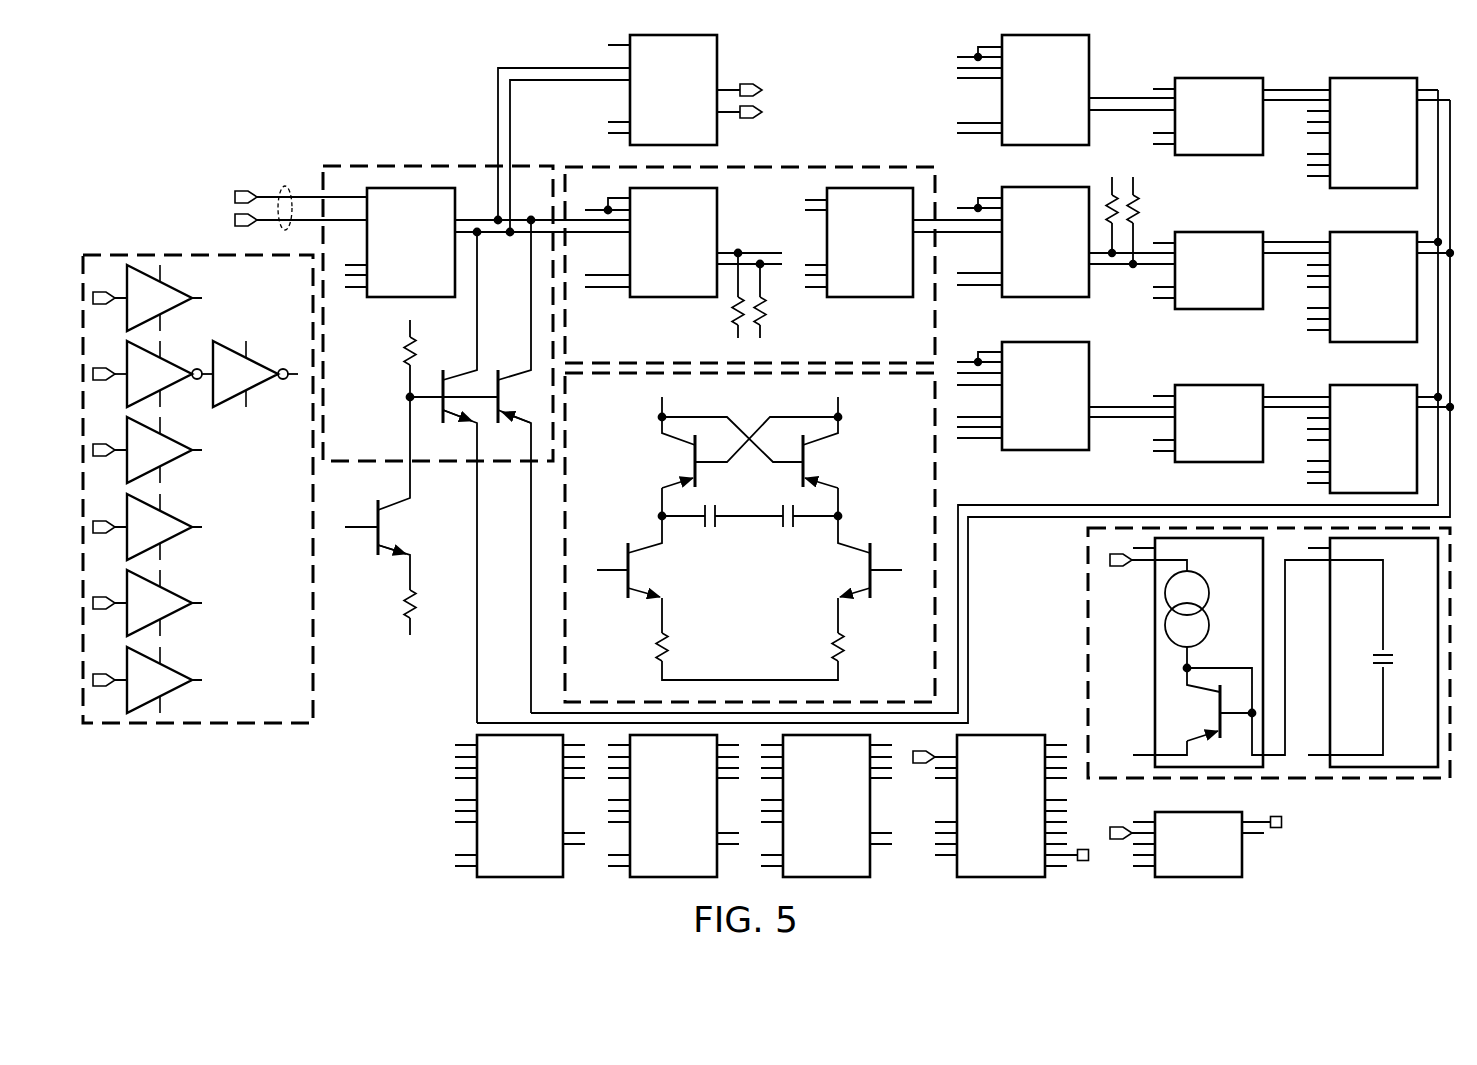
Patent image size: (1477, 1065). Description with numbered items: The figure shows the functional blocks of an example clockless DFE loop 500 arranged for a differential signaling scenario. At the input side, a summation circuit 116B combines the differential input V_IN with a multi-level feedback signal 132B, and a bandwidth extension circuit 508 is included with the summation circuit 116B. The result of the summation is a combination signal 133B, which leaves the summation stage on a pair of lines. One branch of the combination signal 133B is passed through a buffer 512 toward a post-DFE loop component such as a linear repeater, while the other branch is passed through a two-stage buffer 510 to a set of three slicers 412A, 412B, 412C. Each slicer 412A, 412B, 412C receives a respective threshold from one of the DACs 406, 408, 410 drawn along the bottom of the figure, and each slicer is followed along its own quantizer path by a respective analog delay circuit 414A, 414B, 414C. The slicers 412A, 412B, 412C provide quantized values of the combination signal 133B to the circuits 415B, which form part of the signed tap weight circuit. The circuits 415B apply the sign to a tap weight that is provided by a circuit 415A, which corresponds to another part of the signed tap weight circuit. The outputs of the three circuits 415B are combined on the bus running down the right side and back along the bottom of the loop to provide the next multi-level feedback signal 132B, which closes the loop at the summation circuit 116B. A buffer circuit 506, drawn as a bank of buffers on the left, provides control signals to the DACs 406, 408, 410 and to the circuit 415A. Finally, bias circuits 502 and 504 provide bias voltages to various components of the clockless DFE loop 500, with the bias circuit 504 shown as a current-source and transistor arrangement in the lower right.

The clockless DFE loop 500 is at (188, 826).
The buffer circuit 506 is at (146, 251).
The summation circuit 116B is at (358, 164).
The combination signal 133B is at (478, 122).
The buffer 512 is at (651, 101).
The two-stage buffer 510 is at (859, 165).
The bandwidth extension circuit 508 is at (940, 484).
The multi-level feedback signal 132B is at (1045, 530).
The bias circuit 504 is at (1338, 783).
The slicer 412A is at (1017, 101).
The slicer 412B is at (1017, 253).
The slicer 412C is at (1017, 391).
The analog delay circuit 414A is at (1191, 130).
The analog delay circuit 414B is at (1191, 284).
The analog delay circuit 414C is at (1191, 437).
The circuits 415B is at (1345, 146).
The circuit 415A is at (973, 816).
The DAC 406 is at (498, 816).
The DAC 408 is at (651, 816).
The DAC 410 is at (805, 816).
The bias circuit 502 is at (1176, 856).